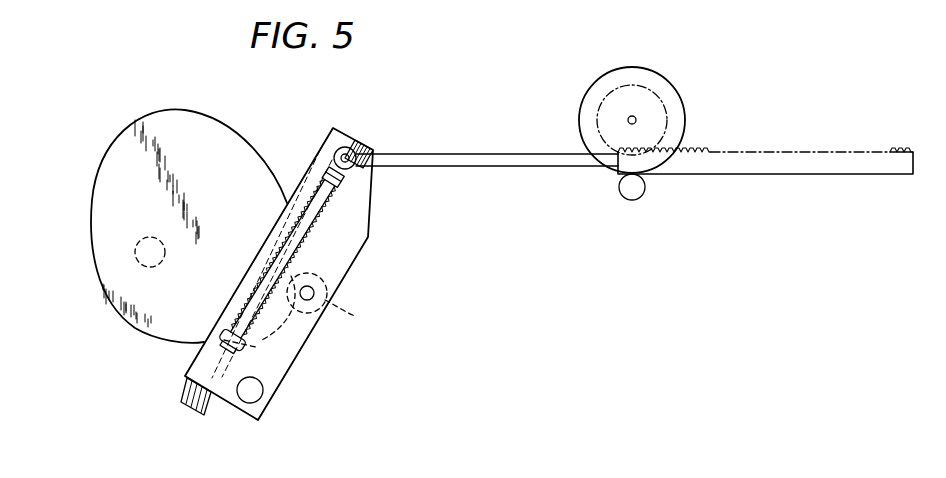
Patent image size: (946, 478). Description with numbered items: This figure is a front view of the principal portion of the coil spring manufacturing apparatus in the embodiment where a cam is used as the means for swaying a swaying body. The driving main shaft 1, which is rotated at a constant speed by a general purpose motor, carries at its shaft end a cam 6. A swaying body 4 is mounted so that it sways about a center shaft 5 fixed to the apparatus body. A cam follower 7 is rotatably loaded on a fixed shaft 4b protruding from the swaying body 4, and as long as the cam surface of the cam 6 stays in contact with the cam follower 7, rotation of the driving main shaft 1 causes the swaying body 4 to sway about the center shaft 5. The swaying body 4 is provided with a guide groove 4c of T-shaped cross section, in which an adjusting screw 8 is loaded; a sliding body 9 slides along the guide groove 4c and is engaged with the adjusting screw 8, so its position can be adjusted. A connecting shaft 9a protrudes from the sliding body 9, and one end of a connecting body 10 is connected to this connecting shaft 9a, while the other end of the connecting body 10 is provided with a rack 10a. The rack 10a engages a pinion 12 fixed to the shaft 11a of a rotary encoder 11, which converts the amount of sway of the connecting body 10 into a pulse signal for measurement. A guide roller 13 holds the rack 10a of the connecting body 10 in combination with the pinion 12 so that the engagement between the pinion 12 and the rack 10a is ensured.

The driving main shaft 1 is at (136, 250).
The swaying body 4 is at (302, 338).
The fixed shaft 4b is at (314, 293).
The guide groove 4c is at (332, 200).
The center shaft 5 is at (260, 392).
The cam 6 is at (231, 148).
The cam follower 7 is at (328, 307).
The adjusting screw 8 is at (192, 408).
The sliding body 9 is at (352, 147).
The connecting shaft 9a is at (325, 142).
The connecting body 10 is at (744, 156).
The rack 10a is at (808, 152).
The rotary encoder 11 is at (597, 86).
The shaft 11a is at (636, 117).
The pinion 12 is at (597, 124).
The guide roller 13 is at (641, 191).